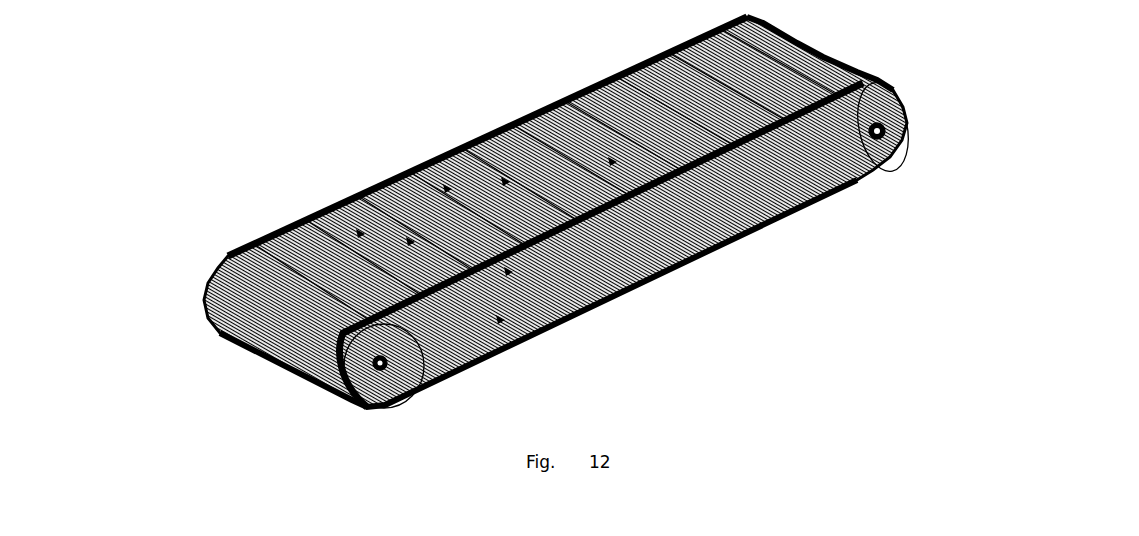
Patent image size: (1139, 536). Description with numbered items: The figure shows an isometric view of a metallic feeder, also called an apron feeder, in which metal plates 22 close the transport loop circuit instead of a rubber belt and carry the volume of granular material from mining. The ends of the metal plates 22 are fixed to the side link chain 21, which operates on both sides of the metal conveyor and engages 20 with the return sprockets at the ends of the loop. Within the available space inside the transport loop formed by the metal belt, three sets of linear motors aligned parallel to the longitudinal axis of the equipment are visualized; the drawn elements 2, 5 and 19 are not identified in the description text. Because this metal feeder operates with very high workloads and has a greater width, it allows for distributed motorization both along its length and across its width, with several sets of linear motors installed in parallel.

The support rollers 2 is at (558, 322).
The conveyor belt 5 is at (343, 202).
The pulley 19 is at (893, 106).
The engagement with return sprockets 20 is at (893, 138).
The side link chain 21 is at (786, 218).
The metal plates 22 is at (818, 54).